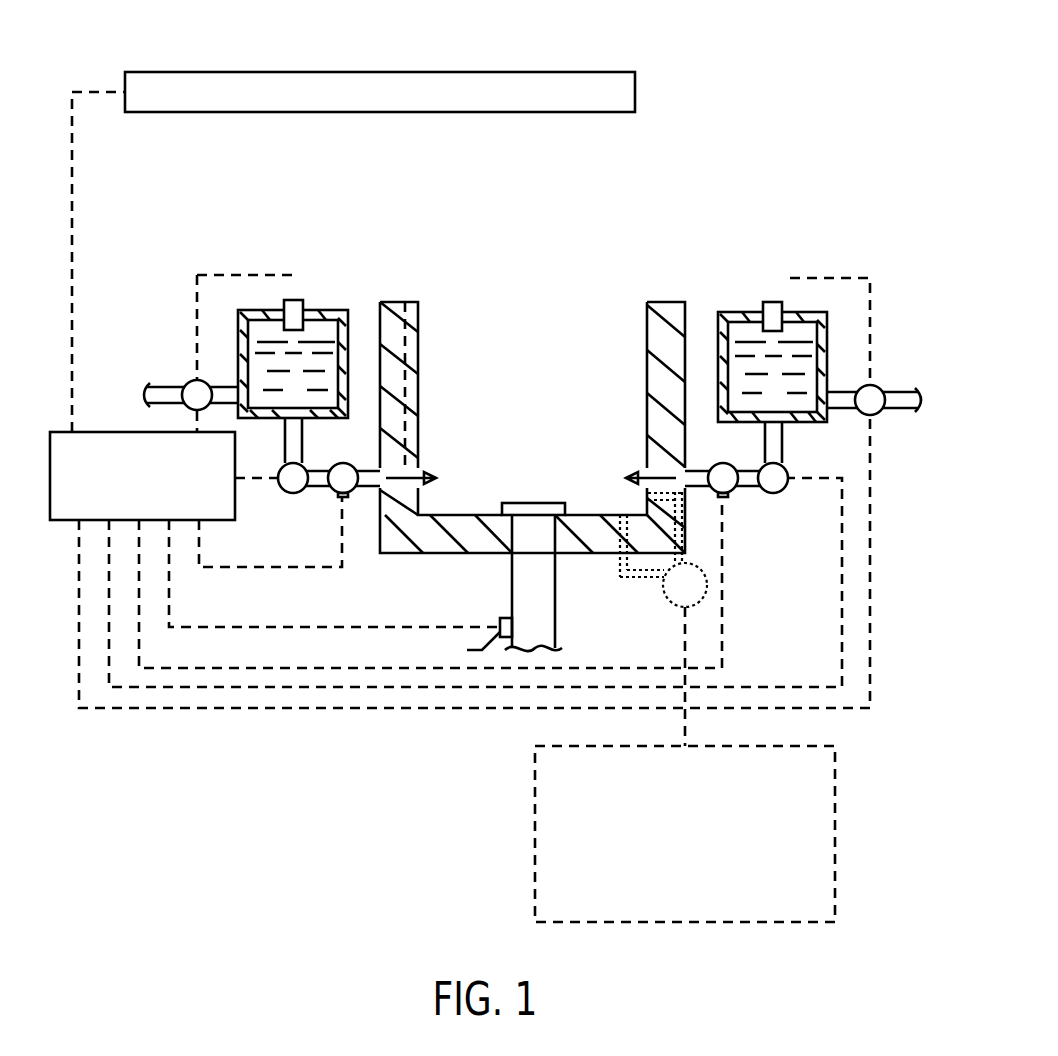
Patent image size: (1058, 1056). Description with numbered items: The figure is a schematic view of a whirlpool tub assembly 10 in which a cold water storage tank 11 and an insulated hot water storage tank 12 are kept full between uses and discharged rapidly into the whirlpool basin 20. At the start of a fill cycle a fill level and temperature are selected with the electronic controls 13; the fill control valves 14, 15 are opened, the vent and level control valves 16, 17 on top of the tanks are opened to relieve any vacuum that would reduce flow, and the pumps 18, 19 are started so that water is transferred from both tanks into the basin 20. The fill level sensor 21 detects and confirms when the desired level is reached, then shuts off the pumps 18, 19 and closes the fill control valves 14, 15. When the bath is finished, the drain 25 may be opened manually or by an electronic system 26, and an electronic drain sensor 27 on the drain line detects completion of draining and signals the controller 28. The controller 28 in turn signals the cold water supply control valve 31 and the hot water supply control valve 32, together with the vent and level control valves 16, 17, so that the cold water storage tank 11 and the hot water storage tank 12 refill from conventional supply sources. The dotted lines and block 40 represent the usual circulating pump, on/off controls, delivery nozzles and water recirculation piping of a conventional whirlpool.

The whirlpool tub assembly 10 is at (400, 737).
The cold water storage tank 11 is at (348, 340).
The hot water storage tank 12 is at (718, 350).
The electronic controls 13 is at (378, 72).
The fill control valve 14 is at (338, 463).
The fill control valve 15 is at (714, 463).
The vent and level control valve 16 is at (770, 302).
The vent and level control valve 17 is at (294, 300).
The pump 18 is at (280, 470).
The pump 19 is at (788, 470).
The whirlpool basin 20 is at (418, 368).
The fill level sensor 21 is at (405, 430).
The drain 25 is at (532, 503).
The electronic system 26 is at (252, 627).
The electronic drain sensor 27 is at (546, 591).
The controller 28 is at (138, 432).
The cold water supply control valve 31 is at (172, 387).
The hot water supply control valve 32 is at (896, 392).
The circulating pump, controls, delivery nozzles and recirculation piping 40 is at (835, 832).